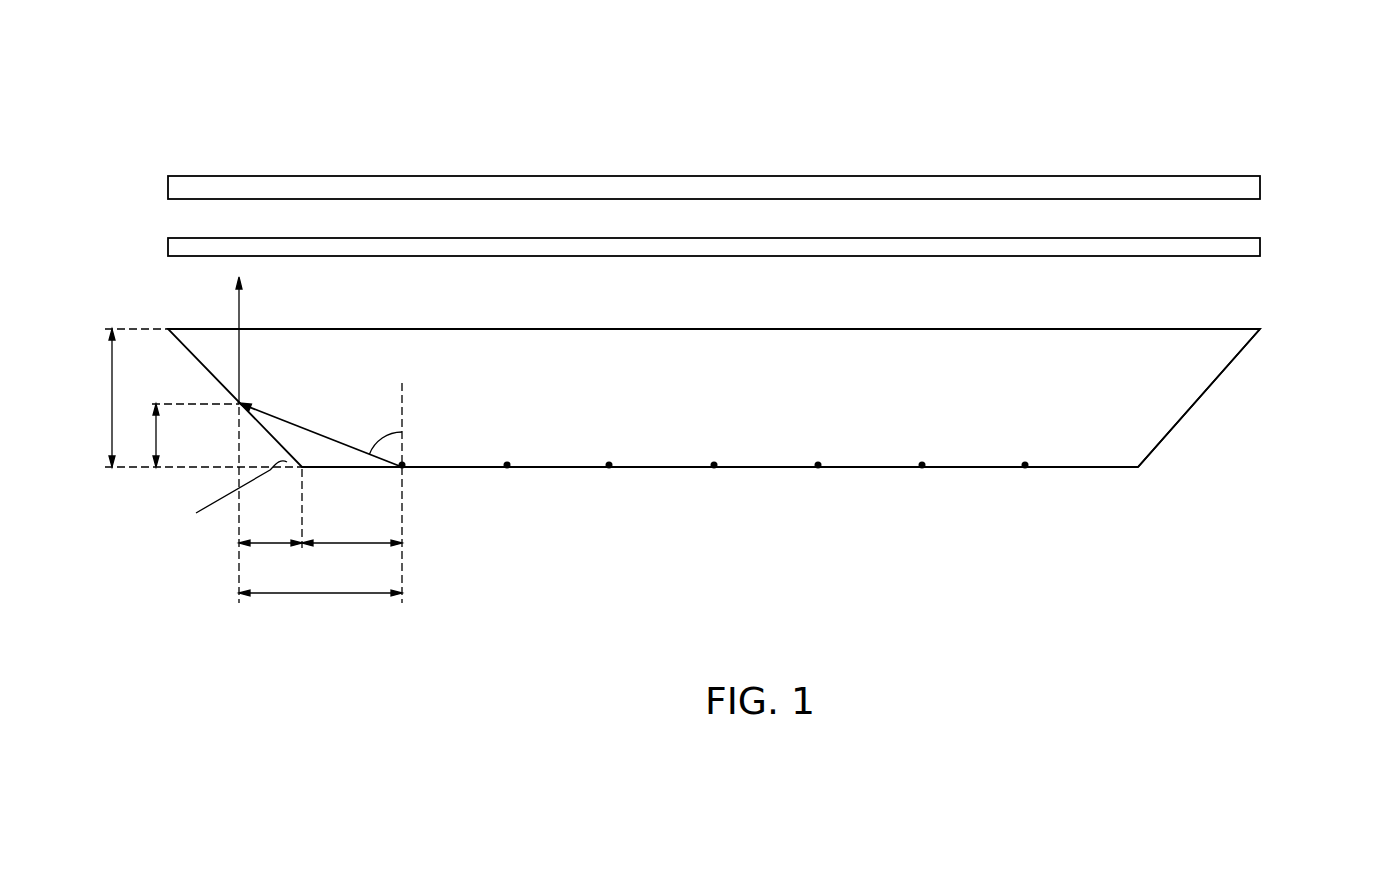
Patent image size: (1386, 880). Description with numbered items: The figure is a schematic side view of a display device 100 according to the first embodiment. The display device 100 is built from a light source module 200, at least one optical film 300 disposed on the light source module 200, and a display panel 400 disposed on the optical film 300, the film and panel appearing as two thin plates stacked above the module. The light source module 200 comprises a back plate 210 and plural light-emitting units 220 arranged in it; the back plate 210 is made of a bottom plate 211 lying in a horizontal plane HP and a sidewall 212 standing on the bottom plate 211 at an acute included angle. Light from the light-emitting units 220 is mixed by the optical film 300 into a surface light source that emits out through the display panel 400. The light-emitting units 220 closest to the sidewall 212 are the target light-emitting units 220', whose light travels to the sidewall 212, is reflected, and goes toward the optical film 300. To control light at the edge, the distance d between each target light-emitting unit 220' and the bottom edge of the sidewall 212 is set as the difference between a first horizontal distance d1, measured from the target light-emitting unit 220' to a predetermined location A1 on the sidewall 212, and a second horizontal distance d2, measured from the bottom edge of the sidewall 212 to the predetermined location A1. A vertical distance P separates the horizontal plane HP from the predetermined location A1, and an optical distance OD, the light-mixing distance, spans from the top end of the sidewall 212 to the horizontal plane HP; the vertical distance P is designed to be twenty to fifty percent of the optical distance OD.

The display device 100 is at (141, 108).
The light source module 200 is at (1264, 366).
The back plate 210 is at (1150, 472).
The bottom plate 211 is at (1093, 470).
The sidewall 212 is at (1191, 407).
The light-emitting units 220 is at (766, 510).
The target light-emitting units 220' is at (382, 470).
The optical film 300 is at (1260, 246).
The display panel 400 is at (1260, 187).
The predetermined location A1 is at (241, 404).
The optical distance OD is at (86, 398).
The vertical distance P is at (143, 435).
The horizontal plane HP is at (129, 470).
The distance d is at (352, 526).
The first horizontal distance d1 is at (320, 576).
The second horizontal distance d2 is at (270, 526).